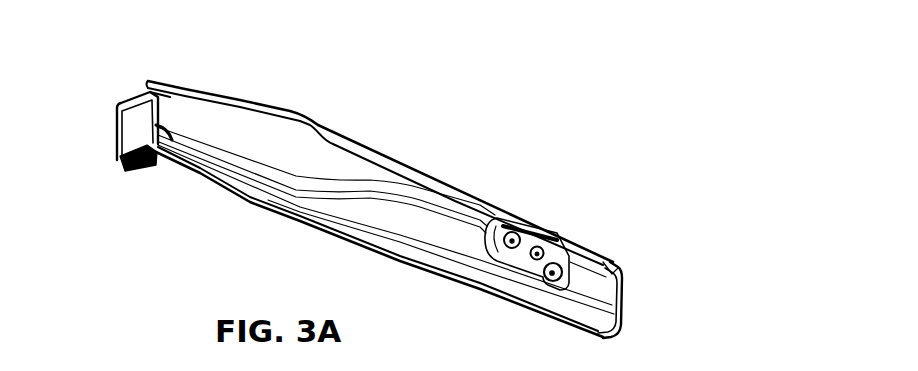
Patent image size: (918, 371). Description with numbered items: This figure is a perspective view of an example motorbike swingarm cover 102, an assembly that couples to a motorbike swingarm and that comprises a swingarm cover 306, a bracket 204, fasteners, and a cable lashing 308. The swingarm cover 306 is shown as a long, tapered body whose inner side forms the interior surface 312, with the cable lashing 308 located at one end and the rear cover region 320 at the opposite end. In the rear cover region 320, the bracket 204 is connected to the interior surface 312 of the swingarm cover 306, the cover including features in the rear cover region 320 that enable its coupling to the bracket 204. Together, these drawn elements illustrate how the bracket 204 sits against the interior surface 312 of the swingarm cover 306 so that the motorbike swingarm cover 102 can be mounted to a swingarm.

The motorbike swingarm cover 102 is at (314, 84).
The bracket 204 is at (548, 276).
The swingarm cover 306 is at (410, 162).
The cable lashing 308 is at (108, 168).
The interior surface 312 is at (292, 163).
The rear cover region 320 is at (638, 258).